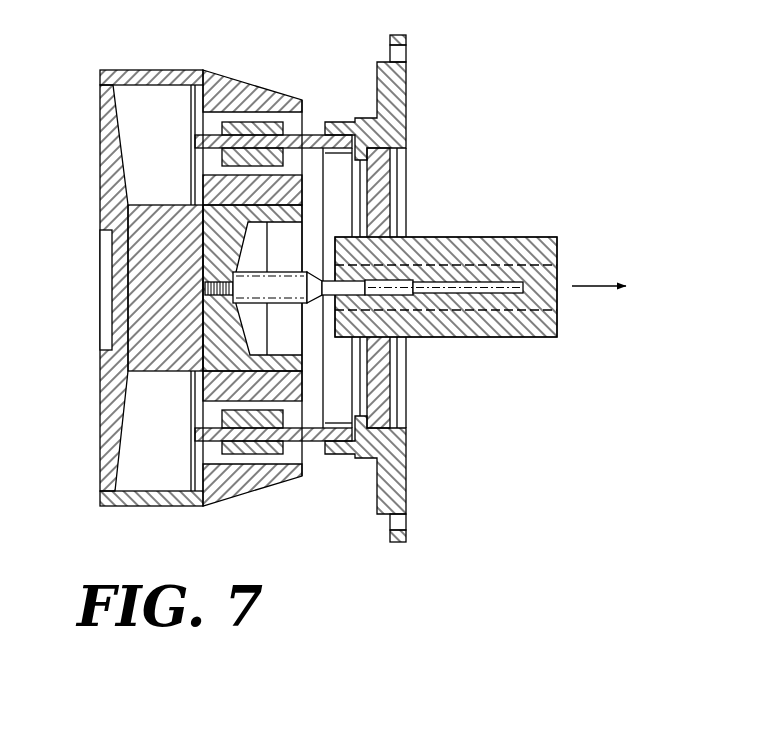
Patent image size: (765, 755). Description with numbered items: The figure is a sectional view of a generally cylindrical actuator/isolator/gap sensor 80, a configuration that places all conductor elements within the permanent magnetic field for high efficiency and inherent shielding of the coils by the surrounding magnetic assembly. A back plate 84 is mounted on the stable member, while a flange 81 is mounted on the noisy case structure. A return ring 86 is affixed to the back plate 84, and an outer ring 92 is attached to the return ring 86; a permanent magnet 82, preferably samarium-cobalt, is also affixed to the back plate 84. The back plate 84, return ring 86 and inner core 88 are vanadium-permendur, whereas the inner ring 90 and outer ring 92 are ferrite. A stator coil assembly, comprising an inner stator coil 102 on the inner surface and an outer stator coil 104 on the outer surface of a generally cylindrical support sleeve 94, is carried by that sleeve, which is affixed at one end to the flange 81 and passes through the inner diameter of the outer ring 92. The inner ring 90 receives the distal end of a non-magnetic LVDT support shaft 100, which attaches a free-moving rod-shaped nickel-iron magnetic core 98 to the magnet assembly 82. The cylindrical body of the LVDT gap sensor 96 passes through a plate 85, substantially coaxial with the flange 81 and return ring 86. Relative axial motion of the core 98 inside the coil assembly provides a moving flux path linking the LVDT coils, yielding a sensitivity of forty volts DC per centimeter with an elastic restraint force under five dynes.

The actuator/isolator/gap sensor 80 is at (229, 12).
The flange 81 is at (410, 529).
The permanent magnet 82 is at (161, 378).
The back plate 84 is at (100, 446).
The plate 85 is at (382, 372).
The return ring 86 is at (178, 68).
The inner core 88 is at (200, 258).
The inner ring 90 is at (199, 187).
The outer ring 92 is at (229, 71).
The support sleeve 94 is at (312, 131).
The LVDT gap sensor 96 is at (479, 340).
The magnetic core 98 is at (398, 281).
The LVDT support shaft 100 is at (283, 269).
The inner stator coil 102 is at (292, 423).
The outer stator coil 104 is at (290, 467).